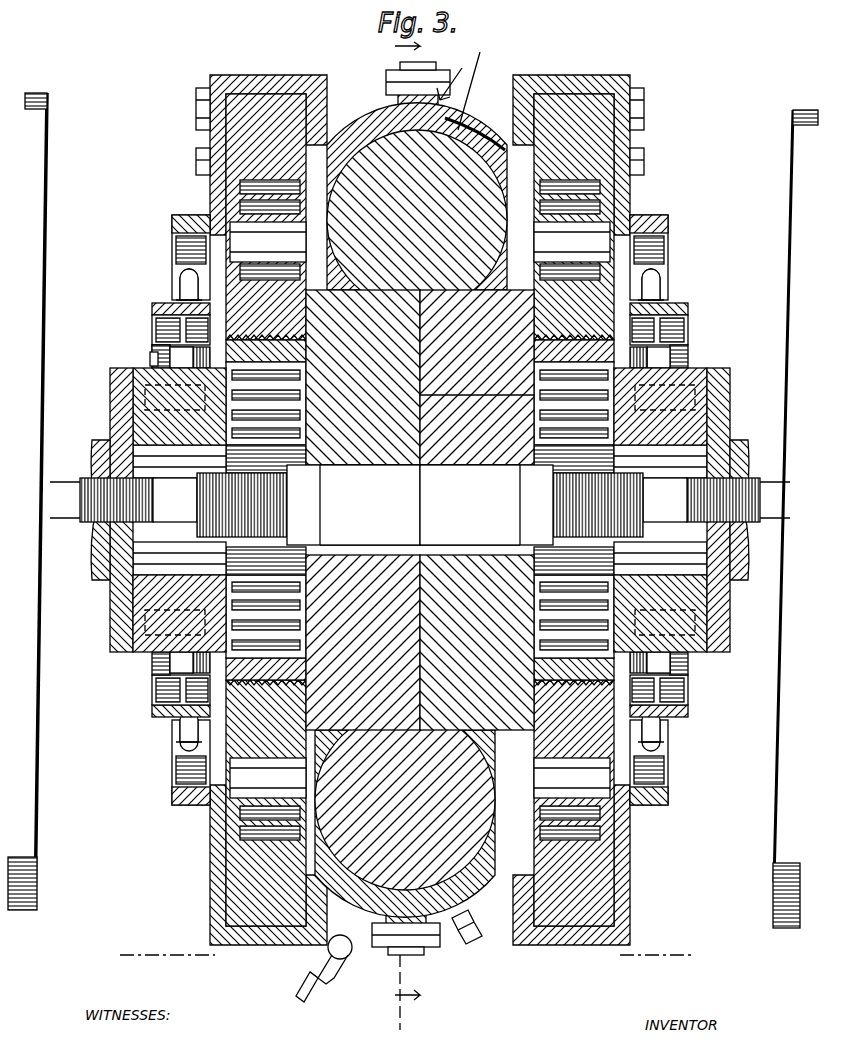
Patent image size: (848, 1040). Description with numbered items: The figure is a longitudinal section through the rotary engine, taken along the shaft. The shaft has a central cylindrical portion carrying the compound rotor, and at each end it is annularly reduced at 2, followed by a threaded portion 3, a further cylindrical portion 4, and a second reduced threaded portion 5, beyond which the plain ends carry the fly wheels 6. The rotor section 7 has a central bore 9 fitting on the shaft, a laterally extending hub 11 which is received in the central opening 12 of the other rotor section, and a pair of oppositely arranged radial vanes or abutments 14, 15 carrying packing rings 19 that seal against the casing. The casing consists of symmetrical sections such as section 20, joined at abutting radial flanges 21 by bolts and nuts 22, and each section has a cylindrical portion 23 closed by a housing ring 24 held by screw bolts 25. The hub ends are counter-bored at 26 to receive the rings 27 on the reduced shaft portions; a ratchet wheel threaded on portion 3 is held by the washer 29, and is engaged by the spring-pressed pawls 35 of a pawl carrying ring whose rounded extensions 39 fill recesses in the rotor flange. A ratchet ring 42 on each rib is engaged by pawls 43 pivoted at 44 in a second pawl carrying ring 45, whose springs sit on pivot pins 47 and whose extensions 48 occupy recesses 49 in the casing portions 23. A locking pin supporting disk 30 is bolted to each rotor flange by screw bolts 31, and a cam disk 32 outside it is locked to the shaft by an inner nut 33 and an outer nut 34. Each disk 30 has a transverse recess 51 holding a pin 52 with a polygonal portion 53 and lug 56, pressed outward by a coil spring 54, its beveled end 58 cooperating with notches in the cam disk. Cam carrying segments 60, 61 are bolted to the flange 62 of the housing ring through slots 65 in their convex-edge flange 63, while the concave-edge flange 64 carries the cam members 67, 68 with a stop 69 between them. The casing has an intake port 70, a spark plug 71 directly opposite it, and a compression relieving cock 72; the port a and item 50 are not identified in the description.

The reduced portion of the shaft 2 is at (427, 536).
The threaded portion of the shaft 3 is at (270, 495).
The cylindrical portion of the shaft 4 is at (420, 500).
The second reduced threaded portion of the shaft 5 is at (100, 500).
The fly wheel 6 is at (46, 330).
The rotor section 7 is at (310, 620).
The central bore 9 is at (380, 395).
The hub 11 is at (465, 448).
The central opening 12 is at (465, 600).
The vane or abutment 14 is at (425, 180).
The vane or abutment 15 is at (412, 830).
The piston or packing ring 19 is at (570, 945).
The casing section 20 is at (345, 155).
The radial flange 21 is at (405, 62).
The bolts and nuts 22 is at (388, 78).
The cylindrical portion of the casing 23 is at (250, 100).
The housing ring 24 is at (210, 930).
The screw bolt 25 is at (196, 103).
The counter-bore 26 is at (490, 400).
The ring or collar 27 is at (320, 535).
The washer or nut 29 is at (200, 550).
The locking pin supporting disk 30 is at (685, 360).
The screw bolt 31 is at (110, 628).
The cam disk 32 is at (728, 370).
The nut 33 is at (740, 465).
The nut 34 is at (740, 560).
The pawl 35 is at (300, 412).
The rounded extension 39 is at (285, 345).
The ratchet ring 42 is at (420, 270).
The pawl 43 is at (240, 205).
The pivot 44 is at (419, 510).
The second pawl carrying ring or casing 45 is at (625, 100).
The pivot pin 47 is at (585, 130).
The rounded extension 48 is at (238, 90).
The recess 49 is at (282, 78).
The lower packing housing 50 is at (152, 690).
The transverse recess 51 is at (110, 390).
The pin 52 is at (179, 406).
The polygonal portion of the pin 53 is at (181, 357).
The coil spring 54 is at (92, 470).
The lug 56 is at (150, 360).
The beveled end 58 is at (152, 352).
The cam carrying segment 60 is at (180, 738).
The cam carrying segment 61 is at (172, 782).
The flange of the housing ring 62 is at (660, 222).
The flange at the convex edge 63 is at (172, 230).
The flange at the concave edge 64 is at (180, 288).
The circumferential slot 65 is at (178, 750).
The cam member 67 is at (152, 308).
The cam member 68 is at (152, 330).
The stop 69 is at (175, 672).
The intake or inlet port 70 is at (515, 52).
The spark plug 71 is at (472, 945).
The compression relieving cock 72 is at (303, 987).
The port a is at (476, 121).